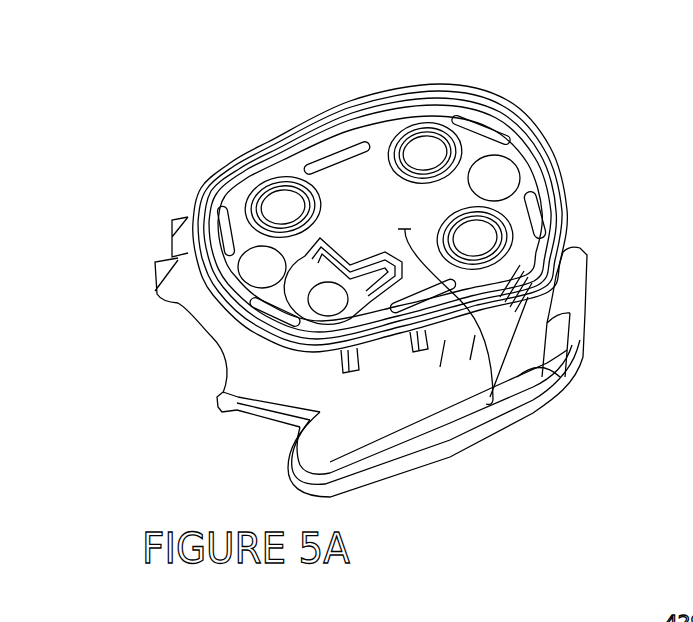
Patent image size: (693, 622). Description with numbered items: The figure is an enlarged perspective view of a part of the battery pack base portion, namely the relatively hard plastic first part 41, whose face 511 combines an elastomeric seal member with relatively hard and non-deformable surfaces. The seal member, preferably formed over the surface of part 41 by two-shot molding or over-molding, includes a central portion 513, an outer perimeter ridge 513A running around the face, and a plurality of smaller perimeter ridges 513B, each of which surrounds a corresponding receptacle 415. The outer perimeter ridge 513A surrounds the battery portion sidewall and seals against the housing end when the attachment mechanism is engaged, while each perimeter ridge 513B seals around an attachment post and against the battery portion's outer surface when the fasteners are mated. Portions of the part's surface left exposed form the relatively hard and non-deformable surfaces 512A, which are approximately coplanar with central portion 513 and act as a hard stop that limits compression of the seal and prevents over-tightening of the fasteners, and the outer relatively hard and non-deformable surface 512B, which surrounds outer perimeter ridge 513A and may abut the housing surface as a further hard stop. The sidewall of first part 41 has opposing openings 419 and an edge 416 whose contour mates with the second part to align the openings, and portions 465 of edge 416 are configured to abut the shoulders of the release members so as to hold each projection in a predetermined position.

The first part 41 is at (176, 94).
The face 511 is at (372, 86).
The outer perimeter ridge 513A is at (203, 243).
The outer relatively hard and non-deformable surface 512B is at (207, 193).
The relatively hard and non-deformable surfaces 512A is at (268, 260).
The receptacle 415 is at (280, 207).
The perimeter ridges 513B is at (292, 177).
The opposing openings 419 is at (180, 344).
The portions of edge 465 is at (158, 306).
The edge 416 is at (316, 497).
The central portion 513 is at (483, 262).